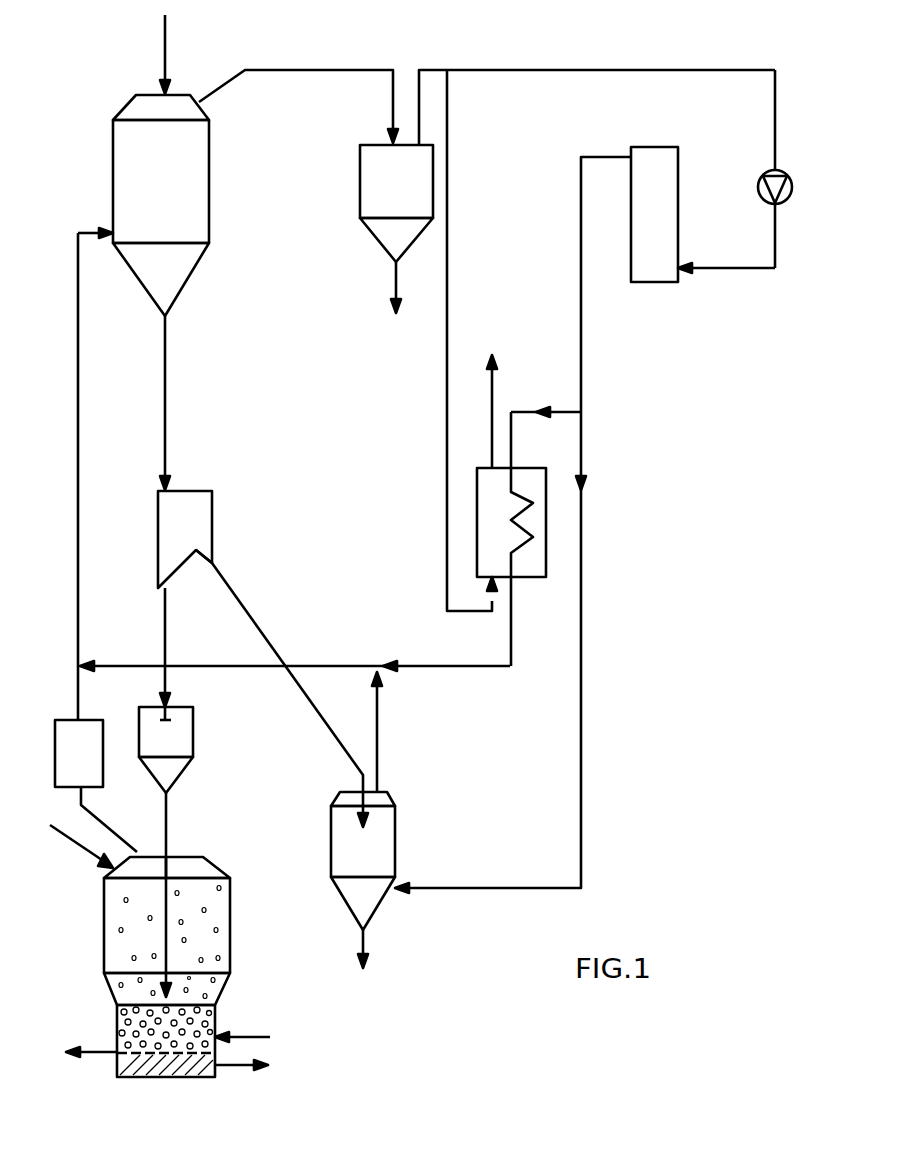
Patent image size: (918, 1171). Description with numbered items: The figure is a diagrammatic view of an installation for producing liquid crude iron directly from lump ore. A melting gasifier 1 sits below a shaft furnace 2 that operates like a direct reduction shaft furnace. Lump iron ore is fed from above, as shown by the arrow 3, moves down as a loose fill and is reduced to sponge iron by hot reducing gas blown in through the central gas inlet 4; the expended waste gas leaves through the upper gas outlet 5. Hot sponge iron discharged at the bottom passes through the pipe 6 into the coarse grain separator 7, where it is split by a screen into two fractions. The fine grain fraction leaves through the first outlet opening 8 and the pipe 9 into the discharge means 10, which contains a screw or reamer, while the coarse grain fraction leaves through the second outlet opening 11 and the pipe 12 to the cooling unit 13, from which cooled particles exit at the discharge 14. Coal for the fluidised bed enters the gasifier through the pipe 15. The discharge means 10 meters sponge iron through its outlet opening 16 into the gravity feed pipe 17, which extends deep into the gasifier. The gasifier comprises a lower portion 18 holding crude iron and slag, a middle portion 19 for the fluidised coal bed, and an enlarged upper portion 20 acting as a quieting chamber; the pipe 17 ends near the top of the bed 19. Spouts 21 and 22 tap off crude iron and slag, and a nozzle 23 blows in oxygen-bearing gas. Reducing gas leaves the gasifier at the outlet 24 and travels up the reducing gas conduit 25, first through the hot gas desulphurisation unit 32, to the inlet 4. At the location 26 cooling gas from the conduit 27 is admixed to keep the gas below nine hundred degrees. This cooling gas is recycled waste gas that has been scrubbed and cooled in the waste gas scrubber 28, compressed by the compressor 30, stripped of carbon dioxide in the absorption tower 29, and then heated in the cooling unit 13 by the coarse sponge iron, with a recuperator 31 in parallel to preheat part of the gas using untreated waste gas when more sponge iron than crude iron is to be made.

The melting gasifier 1 is at (232, 931).
The shaft furnace 2 is at (211, 185).
The arrow 3 is at (167, 60).
The central gas inlet 4 is at (104, 230).
The upper gas outlet 5 is at (206, 104).
The pipe 6 is at (167, 412).
The coarse grain separator 7 is at (214, 518).
The first outlet opening 8 is at (167, 586).
The pipe 9 is at (167, 650).
The discharge means 10 is at (195, 737).
The second outlet opening 11 is at (216, 566).
The pipe 12 is at (290, 644).
The cooling unit 13 is at (397, 826).
The discharge 14 is at (365, 934).
The pipe 15 is at (76, 848).
The outlet opening 16 is at (168, 794).
The gravity feed pipe 17 is at (168, 832).
The lower portion 18 is at (130, 1070).
The middle portion 19 is at (90, 1007).
The upper portion 20 is at (90, 880).
The channel 21 is at (238, 1068).
The channel 22 is at (100, 1058).
The nozzle 23 is at (252, 1034).
The outlet 24 is at (138, 846).
The reducing gas conduit 25 is at (76, 592).
The location 26 is at (76, 674).
The conduit 27 is at (380, 730).
The waste gas scrubber 28 is at (435, 196).
The CO2 absorption tower 29 is at (658, 152).
The compressor 30 is at (757, 188).
The recuperator 31 is at (535, 575).
The hot gas desulphurisation unit 32 is at (104, 763).